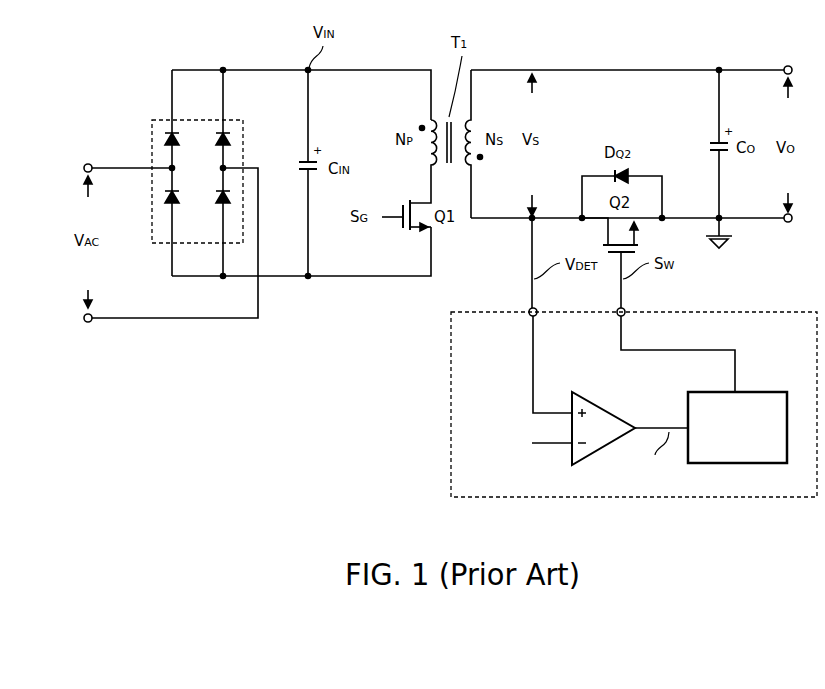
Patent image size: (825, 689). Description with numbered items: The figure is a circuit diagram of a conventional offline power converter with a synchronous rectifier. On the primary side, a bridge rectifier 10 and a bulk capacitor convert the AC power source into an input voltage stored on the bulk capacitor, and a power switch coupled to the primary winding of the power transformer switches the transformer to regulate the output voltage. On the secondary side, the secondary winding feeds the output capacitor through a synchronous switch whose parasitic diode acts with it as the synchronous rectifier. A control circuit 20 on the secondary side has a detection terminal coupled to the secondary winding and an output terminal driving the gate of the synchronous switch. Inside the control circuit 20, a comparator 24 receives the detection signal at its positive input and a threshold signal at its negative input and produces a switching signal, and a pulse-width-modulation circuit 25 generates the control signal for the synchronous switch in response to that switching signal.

The bridge rectifier 10 is at (197, 173).
The control circuit 20 is at (634, 402).
The comparator 24 is at (603, 427).
The PWM circuit 25 is at (737, 416).